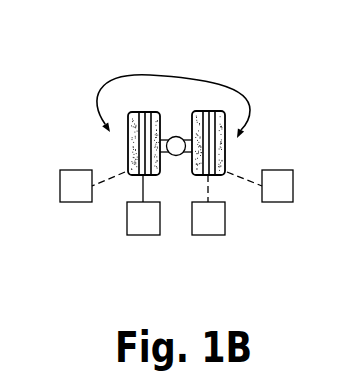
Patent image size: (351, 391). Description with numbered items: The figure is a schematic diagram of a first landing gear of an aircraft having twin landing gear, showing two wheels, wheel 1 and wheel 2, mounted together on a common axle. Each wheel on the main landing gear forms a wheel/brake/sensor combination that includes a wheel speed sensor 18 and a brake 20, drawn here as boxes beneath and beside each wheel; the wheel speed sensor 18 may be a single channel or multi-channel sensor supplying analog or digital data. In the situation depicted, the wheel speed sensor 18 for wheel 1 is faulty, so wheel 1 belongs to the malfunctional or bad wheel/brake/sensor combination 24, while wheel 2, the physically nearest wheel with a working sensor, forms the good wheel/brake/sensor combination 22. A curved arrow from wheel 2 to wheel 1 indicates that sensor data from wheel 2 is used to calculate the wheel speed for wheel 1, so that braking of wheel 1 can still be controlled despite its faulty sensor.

The wheel 1 is at (102, 139).
The wheel 2 is at (216, 143).
The wheel speed sensor 18 is at (127, 205).
The brake 20 is at (60, 180).
The good wheel/brake/sensor combination 22 is at (207, 50).
The bad wheel/brake/sensor combination 24 is at (142, 50).